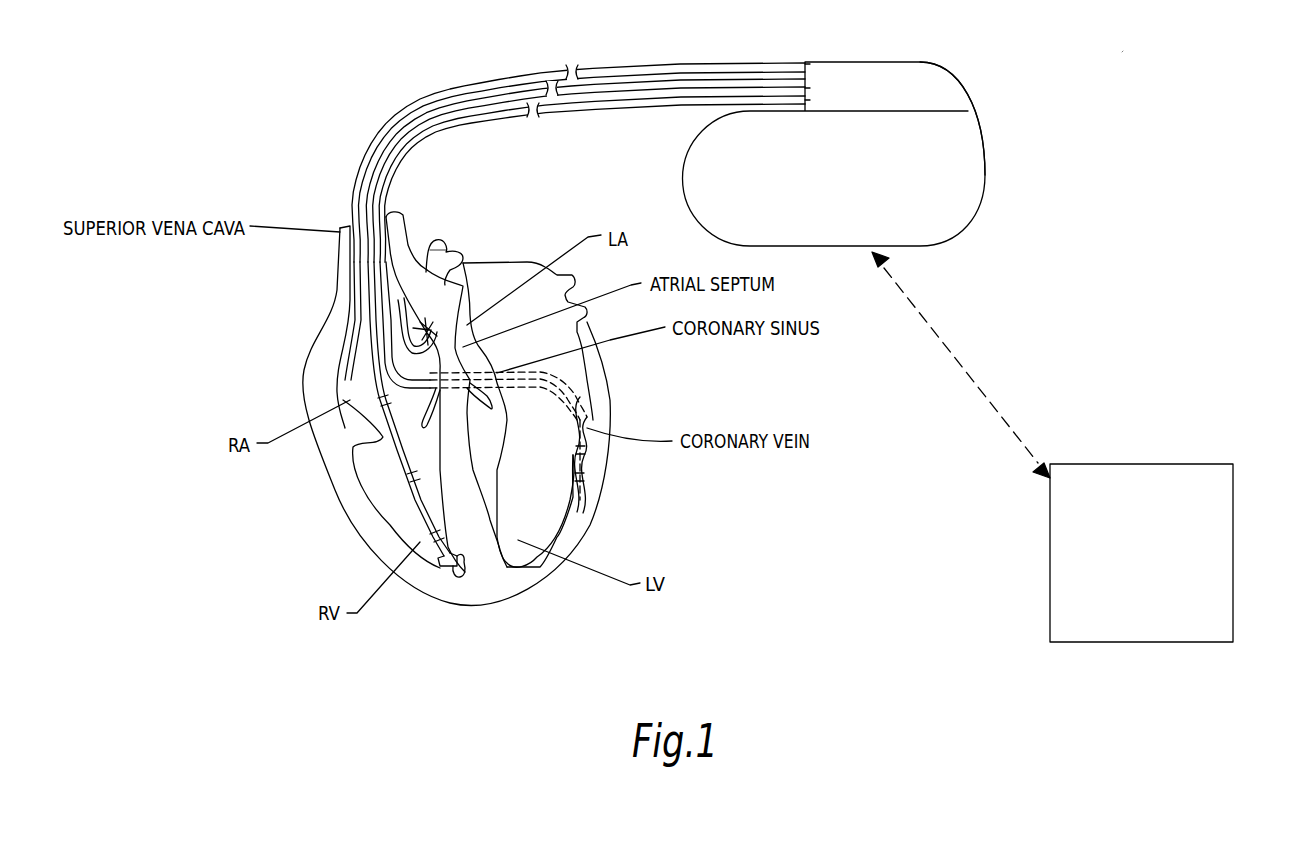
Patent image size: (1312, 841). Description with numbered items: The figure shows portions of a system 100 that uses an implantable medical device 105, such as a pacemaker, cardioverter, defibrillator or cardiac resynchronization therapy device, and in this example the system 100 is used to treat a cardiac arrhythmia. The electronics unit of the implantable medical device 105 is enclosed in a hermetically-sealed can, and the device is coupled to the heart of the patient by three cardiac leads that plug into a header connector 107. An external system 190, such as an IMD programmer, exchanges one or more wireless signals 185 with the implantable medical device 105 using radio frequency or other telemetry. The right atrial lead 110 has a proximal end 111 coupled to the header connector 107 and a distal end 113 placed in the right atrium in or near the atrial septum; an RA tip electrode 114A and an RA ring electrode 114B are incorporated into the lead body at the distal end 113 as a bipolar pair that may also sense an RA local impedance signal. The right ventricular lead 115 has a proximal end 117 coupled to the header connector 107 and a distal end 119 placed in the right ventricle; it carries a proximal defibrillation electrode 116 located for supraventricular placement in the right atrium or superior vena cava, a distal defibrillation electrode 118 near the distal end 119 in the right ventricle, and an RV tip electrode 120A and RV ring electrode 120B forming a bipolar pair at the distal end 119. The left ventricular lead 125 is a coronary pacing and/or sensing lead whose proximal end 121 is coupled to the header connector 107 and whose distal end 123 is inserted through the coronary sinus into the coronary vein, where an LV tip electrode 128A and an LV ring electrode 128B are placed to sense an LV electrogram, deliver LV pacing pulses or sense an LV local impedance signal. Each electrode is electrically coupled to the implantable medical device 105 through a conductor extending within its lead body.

The system 100 is at (1128, 50).
The implantable medical device 105 is at (967, 220).
The header connector 107 is at (958, 87).
The right atrial lead 110 is at (605, 108).
The proximal end 111 is at (807, 102).
The distal end 113 is at (465, 263).
The RA tip electrode 114A is at (465, 308).
The RA ring electrode 114B is at (438, 245).
The right ventricular lead 115 is at (480, 83).
The proximal defibrillation electrode 116 is at (350, 347).
The proximal end 117 is at (807, 72).
The distal defibrillation electrode 118 is at (408, 495).
The distal end 119 is at (447, 580).
The RV tip electrode 120A is at (449, 578).
The RV ring electrode 120B is at (433, 565).
The proximal end 121 is at (807, 86).
The distal end 123 is at (587, 503).
The left ventricular lead 125 is at (450, 116).
The LV tip electrode 128A is at (587, 477).
The LV ring electrode 128B is at (587, 450).
The wireless signals 185 is at (928, 322).
The external system 190 is at (1233, 482).